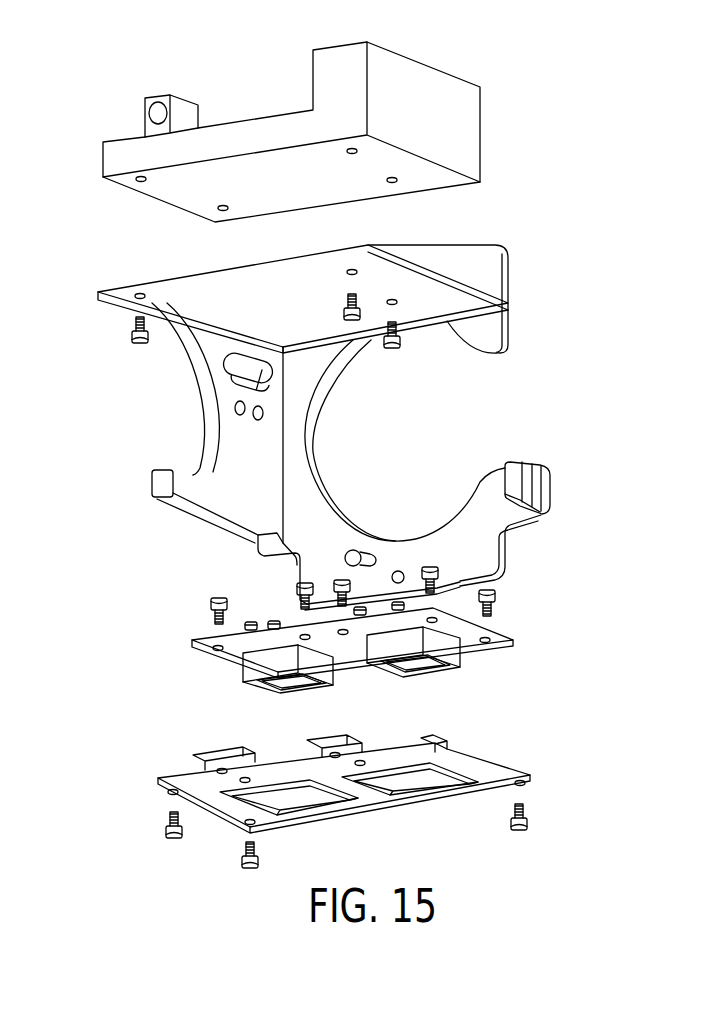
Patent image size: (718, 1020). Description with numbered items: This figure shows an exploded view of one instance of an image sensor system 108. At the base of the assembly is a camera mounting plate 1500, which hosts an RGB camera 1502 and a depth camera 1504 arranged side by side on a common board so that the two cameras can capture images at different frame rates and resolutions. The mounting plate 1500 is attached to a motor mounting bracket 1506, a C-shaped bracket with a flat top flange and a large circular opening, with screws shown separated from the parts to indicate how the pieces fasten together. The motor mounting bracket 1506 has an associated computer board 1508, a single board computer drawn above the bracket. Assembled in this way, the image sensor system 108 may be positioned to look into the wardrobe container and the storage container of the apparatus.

The image sensor system 108 is at (173, 53).
The camera mounting plate 1500 is at (523, 770).
The RGB camera 1502 is at (255, 668).
The depth camera 1504 is at (448, 650).
The motor mounting bracket 1506 is at (508, 339).
The computer board 1508 is at (480, 133).